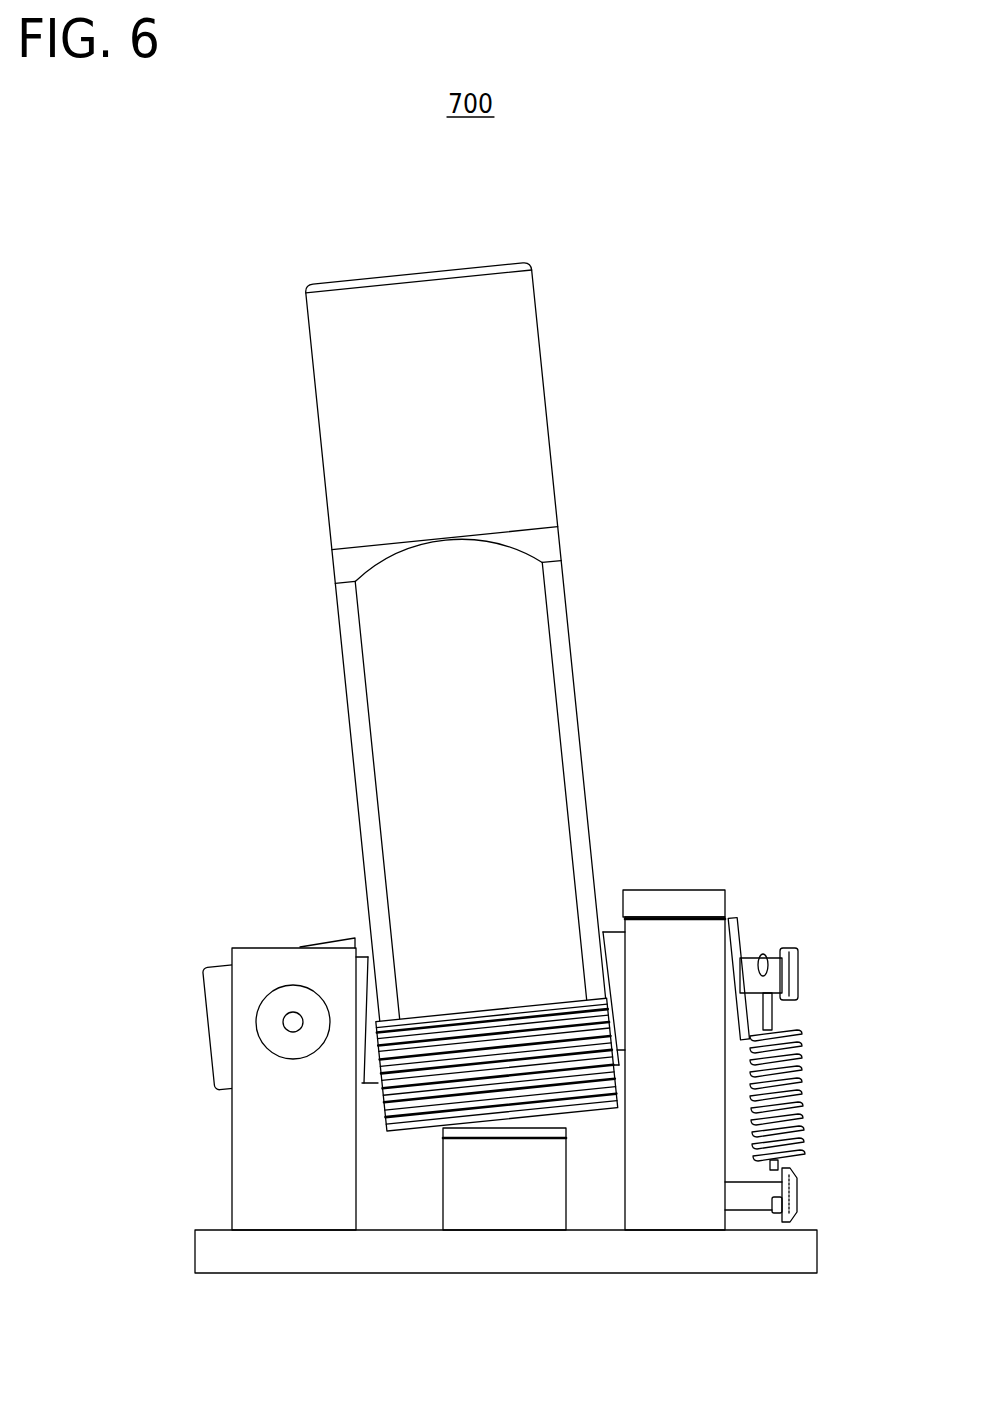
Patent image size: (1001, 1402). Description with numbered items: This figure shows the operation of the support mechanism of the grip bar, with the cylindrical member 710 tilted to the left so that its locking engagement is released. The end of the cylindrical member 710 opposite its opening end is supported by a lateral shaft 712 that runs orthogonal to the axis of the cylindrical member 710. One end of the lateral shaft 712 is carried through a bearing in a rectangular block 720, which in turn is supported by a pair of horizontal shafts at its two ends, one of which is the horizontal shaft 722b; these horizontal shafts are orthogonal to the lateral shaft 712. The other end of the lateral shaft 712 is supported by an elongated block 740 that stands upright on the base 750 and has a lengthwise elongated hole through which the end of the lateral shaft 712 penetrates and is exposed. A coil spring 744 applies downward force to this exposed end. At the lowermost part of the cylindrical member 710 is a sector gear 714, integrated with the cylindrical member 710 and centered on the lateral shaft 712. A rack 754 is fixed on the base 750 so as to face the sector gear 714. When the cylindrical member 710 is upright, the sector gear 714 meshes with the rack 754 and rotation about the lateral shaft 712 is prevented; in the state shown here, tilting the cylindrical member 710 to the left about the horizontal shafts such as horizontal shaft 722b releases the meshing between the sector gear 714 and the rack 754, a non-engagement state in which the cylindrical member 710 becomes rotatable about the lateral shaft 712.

The cylindrical member 710 is at (527, 381).
The lateral shaft 712 is at (738, 962).
The sector gear 714 is at (407, 1105).
The rectangular block 720 is at (340, 943).
The horizontal shaft 722b is at (275, 1005).
The elongated block 740 is at (688, 903).
The spring 744 is at (795, 1075).
The base 750 is at (808, 1255).
The rack 754 is at (532, 1205).